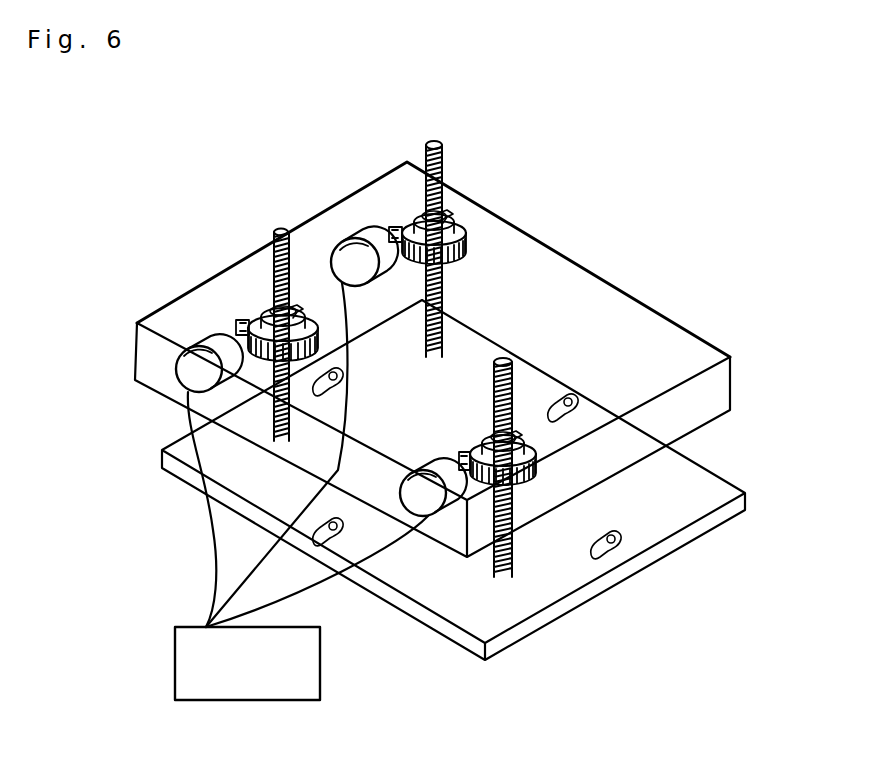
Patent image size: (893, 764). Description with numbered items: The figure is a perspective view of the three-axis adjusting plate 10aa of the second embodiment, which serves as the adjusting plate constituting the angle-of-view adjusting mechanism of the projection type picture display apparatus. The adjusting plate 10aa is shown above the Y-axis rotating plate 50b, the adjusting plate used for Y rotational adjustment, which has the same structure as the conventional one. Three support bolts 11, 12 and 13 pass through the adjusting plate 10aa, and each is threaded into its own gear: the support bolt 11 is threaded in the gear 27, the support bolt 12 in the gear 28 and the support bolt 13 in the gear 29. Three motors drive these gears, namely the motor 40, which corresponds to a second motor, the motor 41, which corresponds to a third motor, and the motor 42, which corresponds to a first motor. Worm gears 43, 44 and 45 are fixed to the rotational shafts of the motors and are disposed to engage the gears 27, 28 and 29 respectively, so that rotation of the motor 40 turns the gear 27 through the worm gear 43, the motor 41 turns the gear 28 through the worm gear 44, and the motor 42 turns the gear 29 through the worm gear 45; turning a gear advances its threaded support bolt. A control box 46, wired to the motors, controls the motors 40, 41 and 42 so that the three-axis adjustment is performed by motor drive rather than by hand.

The three-axis adjusting plate 10aa is at (568, 258).
The Y-axis rotating plate 50b is at (723, 478).
The support bolt 11 is at (436, 144).
The support bolt 12 is at (512, 357).
The support bolt 13 is at (277, 229).
The gear 27 is at (466, 231).
The gear 28 is at (533, 468).
The gear 29 is at (258, 318).
The motor 40 is at (348, 236).
The motor 41 is at (433, 517).
The motor 42 is at (189, 371).
The worm gear 43 is at (397, 235).
The worm gear 44 is at (463, 473).
The worm gear 45 is at (250, 330).
The control box 46 is at (175, 660).